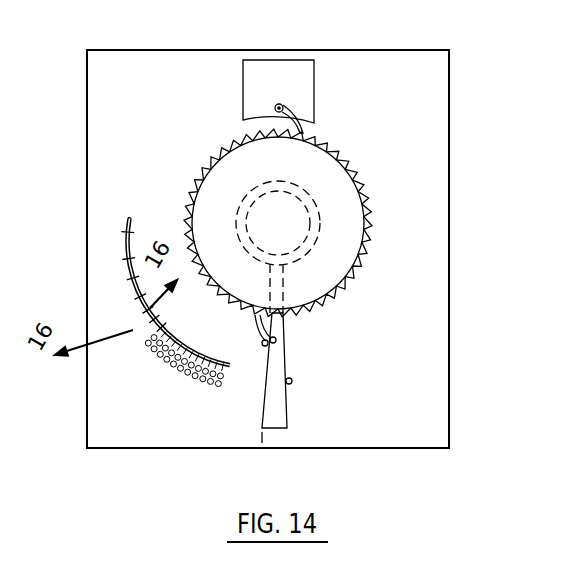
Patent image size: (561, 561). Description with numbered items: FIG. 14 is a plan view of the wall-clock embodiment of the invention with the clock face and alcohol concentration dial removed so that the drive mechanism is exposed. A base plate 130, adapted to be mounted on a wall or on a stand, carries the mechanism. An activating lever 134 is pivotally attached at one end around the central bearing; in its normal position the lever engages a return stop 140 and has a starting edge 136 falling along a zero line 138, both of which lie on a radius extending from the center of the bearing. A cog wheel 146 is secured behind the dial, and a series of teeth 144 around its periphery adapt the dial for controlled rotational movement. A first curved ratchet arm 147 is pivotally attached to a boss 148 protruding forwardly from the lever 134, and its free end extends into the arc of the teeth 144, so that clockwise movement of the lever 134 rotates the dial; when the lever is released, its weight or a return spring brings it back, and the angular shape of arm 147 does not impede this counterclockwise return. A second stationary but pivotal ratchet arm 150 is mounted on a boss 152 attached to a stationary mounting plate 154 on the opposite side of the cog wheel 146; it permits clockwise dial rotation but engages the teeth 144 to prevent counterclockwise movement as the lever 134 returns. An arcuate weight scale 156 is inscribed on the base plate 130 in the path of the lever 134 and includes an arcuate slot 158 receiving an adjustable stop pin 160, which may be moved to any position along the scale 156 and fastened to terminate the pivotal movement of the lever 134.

The base plate 130 is at (413, 418).
The activating lever 134 is at (277, 405).
The starting edge 136 is at (262, 410).
The zero line 138 is at (263, 437).
The return stop 140 is at (292, 381).
The teeth 144 is at (365, 186).
The cog wheel 146 is at (341, 185).
The first curved ratchet arm 147 is at (283, 353).
The boss 148 is at (276, 340).
The second ratchet arm 150 is at (312, 130).
The boss 152 is at (283, 106).
The stationary mounting plate 154 is at (304, 88).
The arcuate weight scale 156 is at (137, 361).
The arcuate slot 158 is at (128, 252).
The adjustable stop pin 160 is at (130, 316).